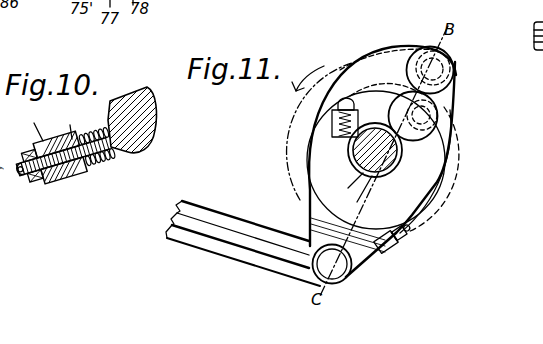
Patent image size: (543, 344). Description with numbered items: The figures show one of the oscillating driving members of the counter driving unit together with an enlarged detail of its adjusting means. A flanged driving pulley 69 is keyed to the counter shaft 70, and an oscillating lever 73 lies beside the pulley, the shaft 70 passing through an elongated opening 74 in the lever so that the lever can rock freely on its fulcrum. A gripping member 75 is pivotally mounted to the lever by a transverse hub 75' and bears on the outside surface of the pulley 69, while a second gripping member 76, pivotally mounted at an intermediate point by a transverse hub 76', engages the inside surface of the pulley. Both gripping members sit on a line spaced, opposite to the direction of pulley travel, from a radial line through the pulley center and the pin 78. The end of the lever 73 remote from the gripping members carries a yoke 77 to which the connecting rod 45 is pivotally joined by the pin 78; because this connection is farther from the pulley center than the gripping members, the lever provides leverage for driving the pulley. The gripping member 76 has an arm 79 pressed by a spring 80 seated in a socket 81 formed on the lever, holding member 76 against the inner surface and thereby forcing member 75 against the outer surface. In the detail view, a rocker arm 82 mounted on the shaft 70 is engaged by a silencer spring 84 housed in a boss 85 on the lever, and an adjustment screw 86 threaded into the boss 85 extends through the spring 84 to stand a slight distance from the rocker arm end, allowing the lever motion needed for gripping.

In FIG. 11, the connecting rod 45 is at (254, 262).
In FIG. 11, the flanged driving pulley 69 is at (444, 209).
In FIG. 11, the counter shaft 70 is at (390, 176).
In FIG. 11, the oscillating lever 73 is at (433, 174).
In FIG. 11, the elongated opening 74 is at (402, 153).
In FIG. 11, the gripping member 75 is at (447, 70).
In FIG. 11, the transverse hub 75' is at (453, 63).
In FIG. 11, the gripping member 76 is at (444, 116).
In FIG. 11, the transverse hub 76' is at (459, 113).
In FIG. 11, the yoke 77 is at (360, 261).
In FIG. 11, the pin 78 is at (347, 276).
In FIG. 11, the arm 79 is at (369, 83).
In FIG. 11, the spring 80 is at (337, 107).
In FIG. 11, the socket 81 is at (332, 127).
In FIG. 10, the rocker arm 82 is at (109, 103).
In FIG. 10, the silencer spring 84 is at (96, 157).
In FIG. 10, the boss 85 is at (88, 175).
In FIG. 11, the boss 85 is at (398, 231).
In FIG. 10, the adjustment screw 86 is at (23, 176).
In FIG. 11, the adjustment screw 86 is at (410, 247).